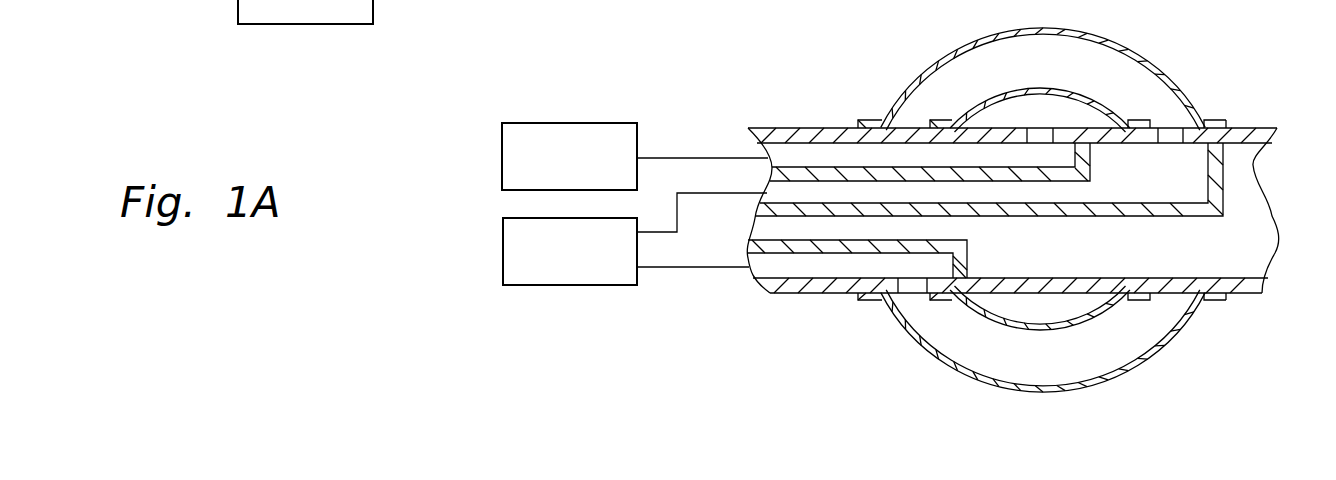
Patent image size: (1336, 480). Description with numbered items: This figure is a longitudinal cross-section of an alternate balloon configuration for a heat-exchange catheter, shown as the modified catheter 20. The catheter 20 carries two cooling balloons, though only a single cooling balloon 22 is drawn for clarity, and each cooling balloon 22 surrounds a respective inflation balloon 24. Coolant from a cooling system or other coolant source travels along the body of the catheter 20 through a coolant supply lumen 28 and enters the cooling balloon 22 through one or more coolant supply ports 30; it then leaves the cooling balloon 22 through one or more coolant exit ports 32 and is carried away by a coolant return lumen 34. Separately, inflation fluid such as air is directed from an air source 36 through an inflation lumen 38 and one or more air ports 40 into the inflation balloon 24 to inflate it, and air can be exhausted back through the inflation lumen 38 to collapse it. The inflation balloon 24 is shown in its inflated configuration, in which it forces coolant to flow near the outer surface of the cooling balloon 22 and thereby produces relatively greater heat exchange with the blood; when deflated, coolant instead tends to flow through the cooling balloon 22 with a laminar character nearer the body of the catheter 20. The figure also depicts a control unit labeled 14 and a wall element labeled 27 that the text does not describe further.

The control system 14 is at (470, 0).
The modified catheter 20 is at (1041, 196).
The cooling balloon 22 is at (1123, 50).
The inflation balloon 24 is at (503, 248).
The inner balloon wall 27 is at (1062, 90).
The coolant supply lumen 28 is at (1140, 187).
The coolant supply port 30 is at (1170, 128).
The coolant exit port 32 is at (913, 288).
The coolant return lumen 34 is at (807, 262).
The air source 36 is at (502, 158).
The inflation lumen 38 is at (803, 157).
The air port 40 is at (1040, 133).